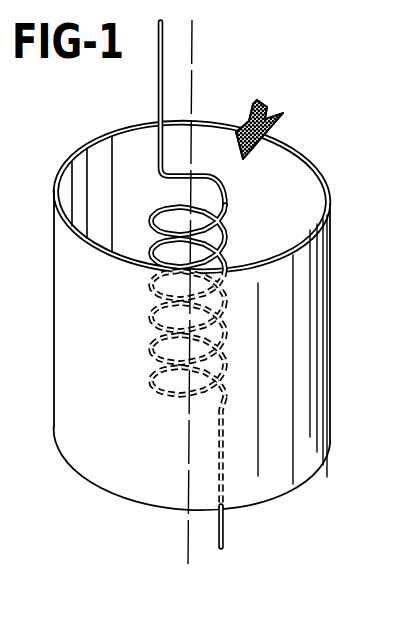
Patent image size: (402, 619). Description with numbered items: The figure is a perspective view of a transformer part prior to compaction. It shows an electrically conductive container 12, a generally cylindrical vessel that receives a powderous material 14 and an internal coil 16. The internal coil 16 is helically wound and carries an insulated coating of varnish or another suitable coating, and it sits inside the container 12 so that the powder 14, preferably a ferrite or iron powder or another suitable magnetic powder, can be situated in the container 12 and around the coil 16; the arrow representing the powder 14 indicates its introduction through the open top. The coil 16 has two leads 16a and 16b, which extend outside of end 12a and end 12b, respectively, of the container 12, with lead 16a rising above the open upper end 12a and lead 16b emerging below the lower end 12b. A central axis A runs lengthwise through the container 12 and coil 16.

The electrically conductive container 12 is at (220, 315).
The end of container 12a is at (310, 158).
The end of container 12b is at (298, 483).
The powderous material 14 is at (270, 116).
The internal coil 16 is at (199, 287).
The lead 16a is at (157, 72).
The lead 16b is at (224, 527).
The central axis A is at (193, 47).